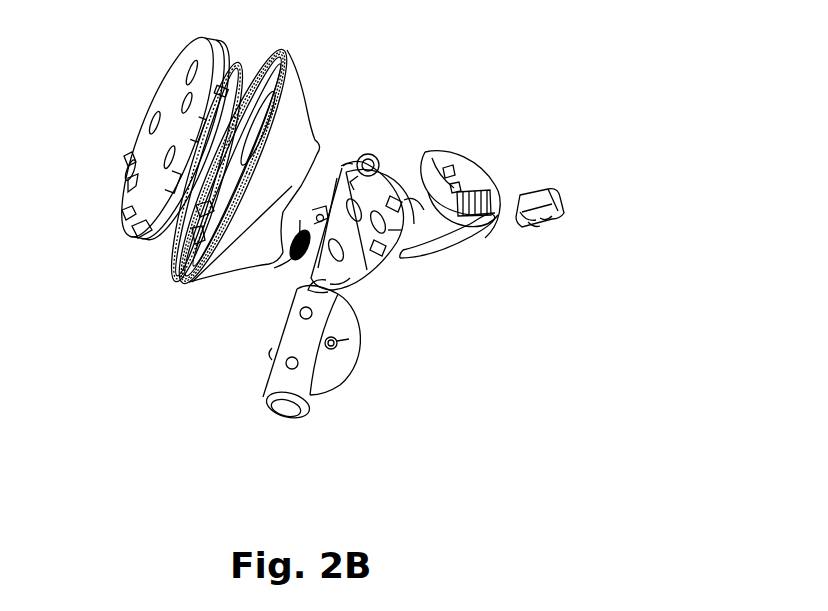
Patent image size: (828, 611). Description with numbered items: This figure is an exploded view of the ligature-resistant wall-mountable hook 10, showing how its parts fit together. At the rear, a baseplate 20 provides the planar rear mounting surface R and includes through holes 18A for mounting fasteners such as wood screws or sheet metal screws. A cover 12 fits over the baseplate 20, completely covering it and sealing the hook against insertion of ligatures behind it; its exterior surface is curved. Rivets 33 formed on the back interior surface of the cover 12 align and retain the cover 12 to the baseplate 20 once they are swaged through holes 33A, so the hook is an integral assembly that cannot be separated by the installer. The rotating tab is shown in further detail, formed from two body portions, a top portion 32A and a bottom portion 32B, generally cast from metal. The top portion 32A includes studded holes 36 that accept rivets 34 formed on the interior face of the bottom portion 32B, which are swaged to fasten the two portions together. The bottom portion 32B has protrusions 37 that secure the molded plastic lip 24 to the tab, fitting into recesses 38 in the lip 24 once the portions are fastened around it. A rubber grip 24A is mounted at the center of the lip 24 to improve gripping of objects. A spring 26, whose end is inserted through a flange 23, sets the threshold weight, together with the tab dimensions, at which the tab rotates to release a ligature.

The ligature-resistant wall-mountable hook 10 is at (530, 118).
The planar rear mounting surface R is at (170, 68).
The cover 12 is at (290, 68).
The through holes 18A is at (128, 209).
The baseplate 20 is at (130, 229).
The flange 23 is at (321, 208).
The lip 24 is at (473, 228).
The rubber grip 24A is at (566, 212).
The spring 26 is at (295, 248).
The top portion 32A is at (357, 365).
The bottom portion 32B is at (402, 186).
The rivets 33 is at (215, 213).
The holes 33A is at (126, 160).
The rivets 34 is at (341, 169).
The studded holes 36 is at (347, 339).
The protrusions 37 is at (404, 202).
The recesses 38 is at (457, 232).